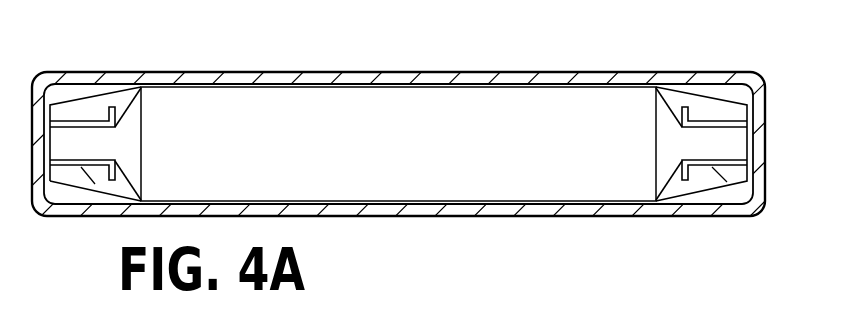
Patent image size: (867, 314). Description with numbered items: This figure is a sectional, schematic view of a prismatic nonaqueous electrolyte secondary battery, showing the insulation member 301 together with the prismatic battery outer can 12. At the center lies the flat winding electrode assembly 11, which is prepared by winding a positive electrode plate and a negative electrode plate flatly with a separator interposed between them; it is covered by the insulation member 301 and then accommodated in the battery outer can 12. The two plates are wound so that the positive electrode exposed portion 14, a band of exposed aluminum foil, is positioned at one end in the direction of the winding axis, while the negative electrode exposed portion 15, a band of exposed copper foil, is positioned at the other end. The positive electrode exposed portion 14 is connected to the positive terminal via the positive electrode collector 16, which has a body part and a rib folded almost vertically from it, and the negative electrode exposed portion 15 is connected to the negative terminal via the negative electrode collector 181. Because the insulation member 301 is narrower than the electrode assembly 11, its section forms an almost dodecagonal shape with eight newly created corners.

The flat winding electrode assembly 11 is at (408, 157).
The prismatic battery outer can 12 is at (575, 212).
The positive electrode exposed portion 14 is at (123, 140).
The negative electrode exposed portion 15 is at (673, 138).
The positive electrode collector 16 is at (82, 166).
The negative electrode collector 181 is at (712, 167).
The insulation member 301 is at (712, 99).